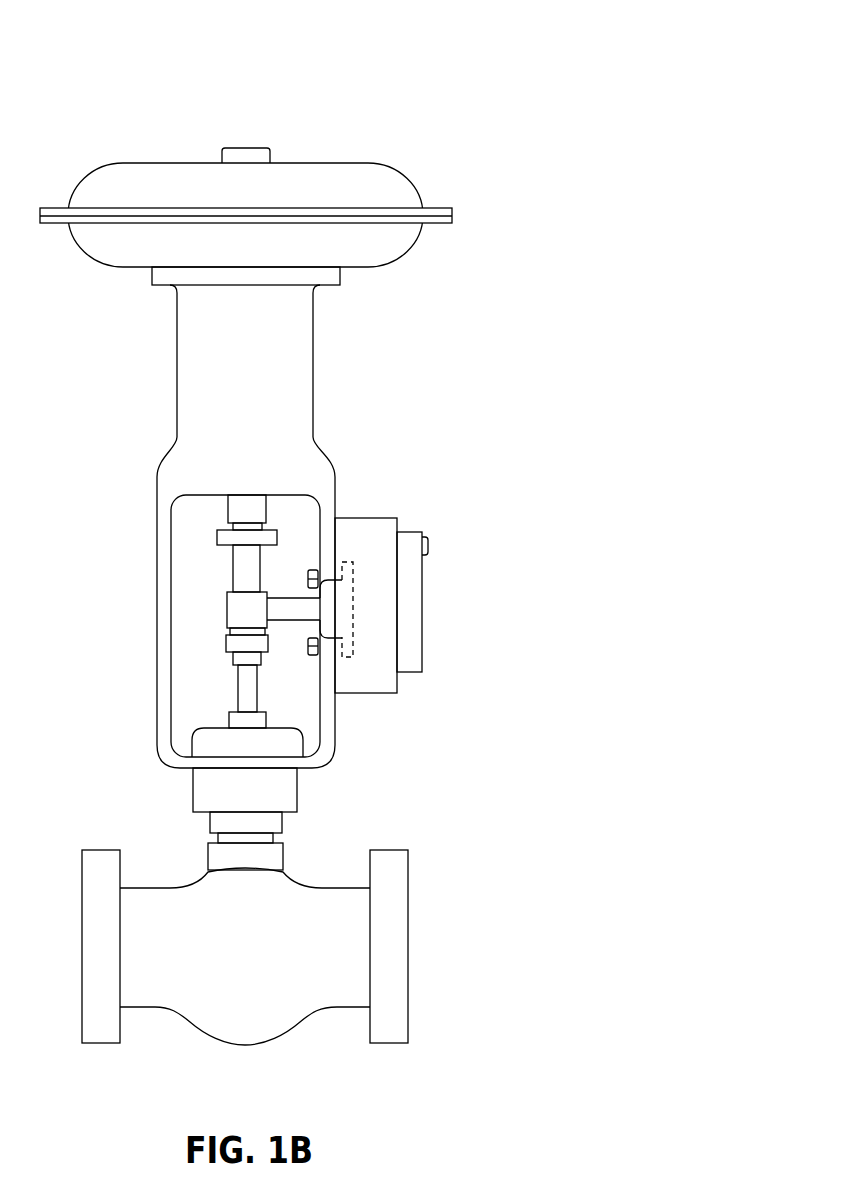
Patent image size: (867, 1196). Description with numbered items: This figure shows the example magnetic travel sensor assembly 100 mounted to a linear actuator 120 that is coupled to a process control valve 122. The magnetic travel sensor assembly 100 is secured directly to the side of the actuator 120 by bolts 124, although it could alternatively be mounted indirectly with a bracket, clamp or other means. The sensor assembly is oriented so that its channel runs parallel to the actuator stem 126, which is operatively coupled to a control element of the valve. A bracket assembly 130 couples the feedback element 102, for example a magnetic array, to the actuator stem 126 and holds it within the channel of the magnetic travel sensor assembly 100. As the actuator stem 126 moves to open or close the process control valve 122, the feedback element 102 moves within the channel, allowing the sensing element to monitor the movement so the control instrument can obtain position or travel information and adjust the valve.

The magnetic travel sensor assembly 100 is at (438, 567).
The feedback element 102 is at (350, 657).
The linear actuator 120 is at (407, 120).
The process control valve 122 is at (348, 827).
The bolts 124 is at (306, 584).
The actuator stem 126 is at (242, 572).
The bracket assembly 130 is at (218, 615).